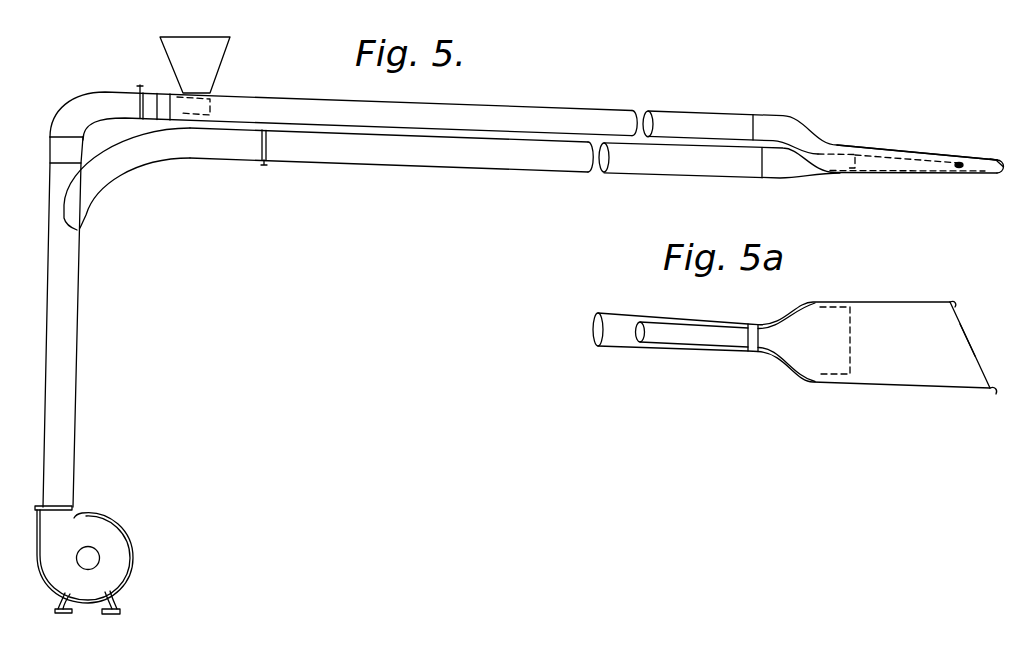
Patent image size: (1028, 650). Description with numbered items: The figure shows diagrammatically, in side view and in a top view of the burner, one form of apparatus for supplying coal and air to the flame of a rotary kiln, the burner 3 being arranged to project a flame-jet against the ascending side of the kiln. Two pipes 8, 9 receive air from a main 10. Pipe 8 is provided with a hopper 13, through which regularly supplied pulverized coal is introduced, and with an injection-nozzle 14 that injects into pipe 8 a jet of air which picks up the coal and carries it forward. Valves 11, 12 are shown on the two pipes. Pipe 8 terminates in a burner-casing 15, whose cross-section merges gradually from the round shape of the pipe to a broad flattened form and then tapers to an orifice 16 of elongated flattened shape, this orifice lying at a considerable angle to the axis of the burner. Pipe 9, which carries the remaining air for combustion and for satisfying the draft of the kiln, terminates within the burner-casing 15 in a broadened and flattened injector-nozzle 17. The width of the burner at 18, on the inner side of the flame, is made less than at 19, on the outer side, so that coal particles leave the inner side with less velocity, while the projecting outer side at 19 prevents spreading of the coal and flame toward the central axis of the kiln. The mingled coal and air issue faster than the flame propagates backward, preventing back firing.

In FIG. 5, the burner 3 is at (912, 152).
In FIG. 5A, the burner 3 is at (895, 347).
In FIG. 5, the pipe 8 is at (487, 115).
In FIG. 5, the pipe 9 is at (498, 160).
In FIG. 5, the main 10 is at (63, 372).
In FIG. 5, the valve 11 is at (149, 90).
In FIG. 5, the valve 12 is at (265, 163).
In FIG. 5, the hopper 13 is at (203, 57).
In FIG. 5, the injection-nozzle 14 is at (193, 110).
In FIG. 5, the burner-casing 15 is at (872, 157).
In FIG. 5, the orifice 16 is at (973, 162).
In FIG. 5A, the orifice 16 is at (967, 330).
In FIG. 5, the injector-nozzle 17 is at (850, 168).
In FIG. 5A, the injector-nozzle 17 is at (827, 322).
In FIG. 5, the inner side of burner 18 is at (955, 165).
In FIG. 5A, the inner side of burner 18 is at (955, 297).
In FIG. 5, the outer side of burner 19 is at (998, 174).
In FIG. 5A, the outer side of burner 19 is at (996, 392).